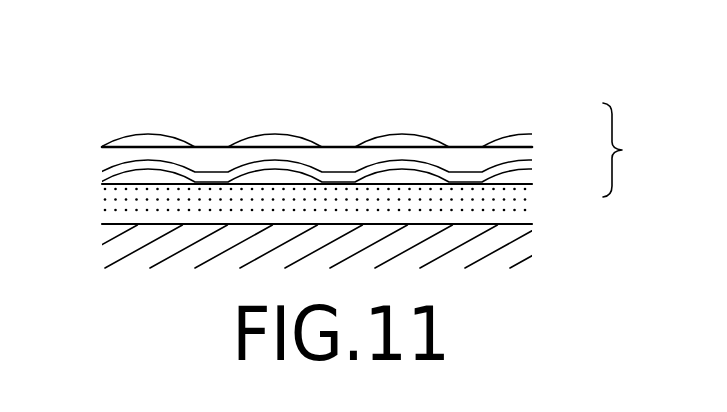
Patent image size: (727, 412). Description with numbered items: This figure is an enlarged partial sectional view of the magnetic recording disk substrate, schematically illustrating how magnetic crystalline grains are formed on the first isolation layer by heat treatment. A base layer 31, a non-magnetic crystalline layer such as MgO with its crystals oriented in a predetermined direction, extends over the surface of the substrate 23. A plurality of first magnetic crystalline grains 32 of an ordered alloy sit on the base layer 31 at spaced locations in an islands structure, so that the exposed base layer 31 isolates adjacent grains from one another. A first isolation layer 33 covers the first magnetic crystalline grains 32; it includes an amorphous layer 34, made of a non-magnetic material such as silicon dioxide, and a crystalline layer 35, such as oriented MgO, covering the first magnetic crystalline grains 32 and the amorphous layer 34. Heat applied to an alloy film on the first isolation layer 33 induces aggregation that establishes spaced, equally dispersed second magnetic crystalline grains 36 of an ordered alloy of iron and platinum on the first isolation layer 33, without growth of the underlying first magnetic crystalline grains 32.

The substrate 23 is at (522, 223).
The base layer 31 is at (128, 186).
The first magnetic crystalline grains 32 is at (137, 169).
The first isolation layer 33 is at (645, 150).
The amorphous layer 34 is at (510, 168).
The crystalline layer 35 is at (507, 147).
The second magnetic crystalline grains 36 is at (148, 137).